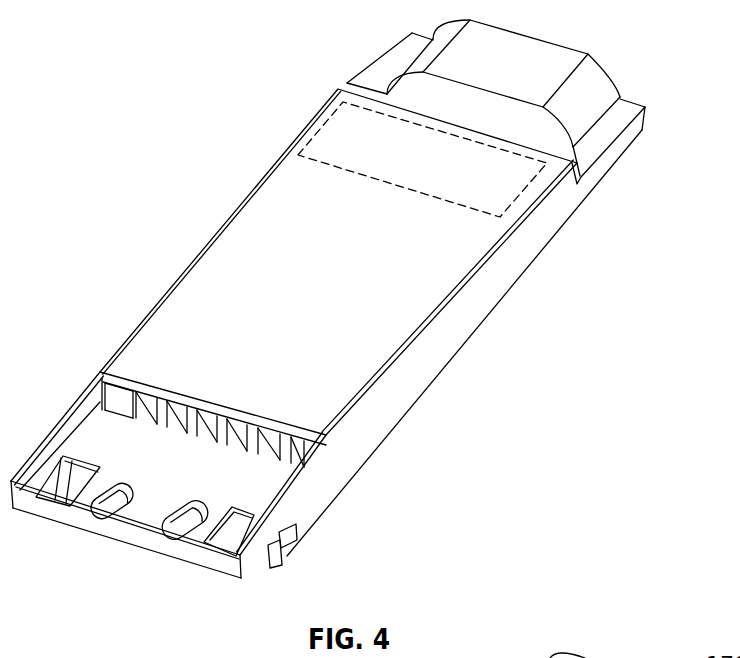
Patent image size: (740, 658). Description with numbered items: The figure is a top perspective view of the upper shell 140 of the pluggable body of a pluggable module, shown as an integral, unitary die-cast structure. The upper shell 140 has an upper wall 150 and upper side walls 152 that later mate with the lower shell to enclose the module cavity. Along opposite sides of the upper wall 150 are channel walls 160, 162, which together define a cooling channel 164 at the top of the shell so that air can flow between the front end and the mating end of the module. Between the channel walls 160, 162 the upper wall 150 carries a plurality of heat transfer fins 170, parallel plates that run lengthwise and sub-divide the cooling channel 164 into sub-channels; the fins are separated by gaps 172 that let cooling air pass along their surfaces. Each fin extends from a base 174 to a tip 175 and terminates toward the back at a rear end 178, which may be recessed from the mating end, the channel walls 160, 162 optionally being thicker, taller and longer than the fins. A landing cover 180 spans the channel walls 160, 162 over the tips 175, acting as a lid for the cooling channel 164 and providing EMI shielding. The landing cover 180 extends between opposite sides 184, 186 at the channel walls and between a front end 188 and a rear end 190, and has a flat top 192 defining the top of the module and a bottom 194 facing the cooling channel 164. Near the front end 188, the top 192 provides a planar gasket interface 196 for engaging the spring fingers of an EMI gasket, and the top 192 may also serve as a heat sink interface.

The upper shell 140 is at (203, 182).
The upper wall 150 is at (293, 170).
The upper side walls 152 is at (459, 347).
The channel wall 160 is at (80, 417).
The channel wall 162 is at (252, 425).
The cooling channel 164 is at (200, 443).
The heat transfer fins 170 is at (158, 417).
The gaps 172 is at (133, 423).
The bases 174 is at (231, 438).
The tips 175 is at (230, 420).
The rear ends 178 is at (98, 390).
The landing cover 180 is at (202, 298).
The side 184 is at (214, 236).
The side 186 is at (453, 300).
The front end 188 is at (507, 143).
The rear end 190 is at (295, 445).
The top 192 is at (350, 380).
The bottom 194 is at (232, 428).
The gasket interface 196 is at (316, 131).